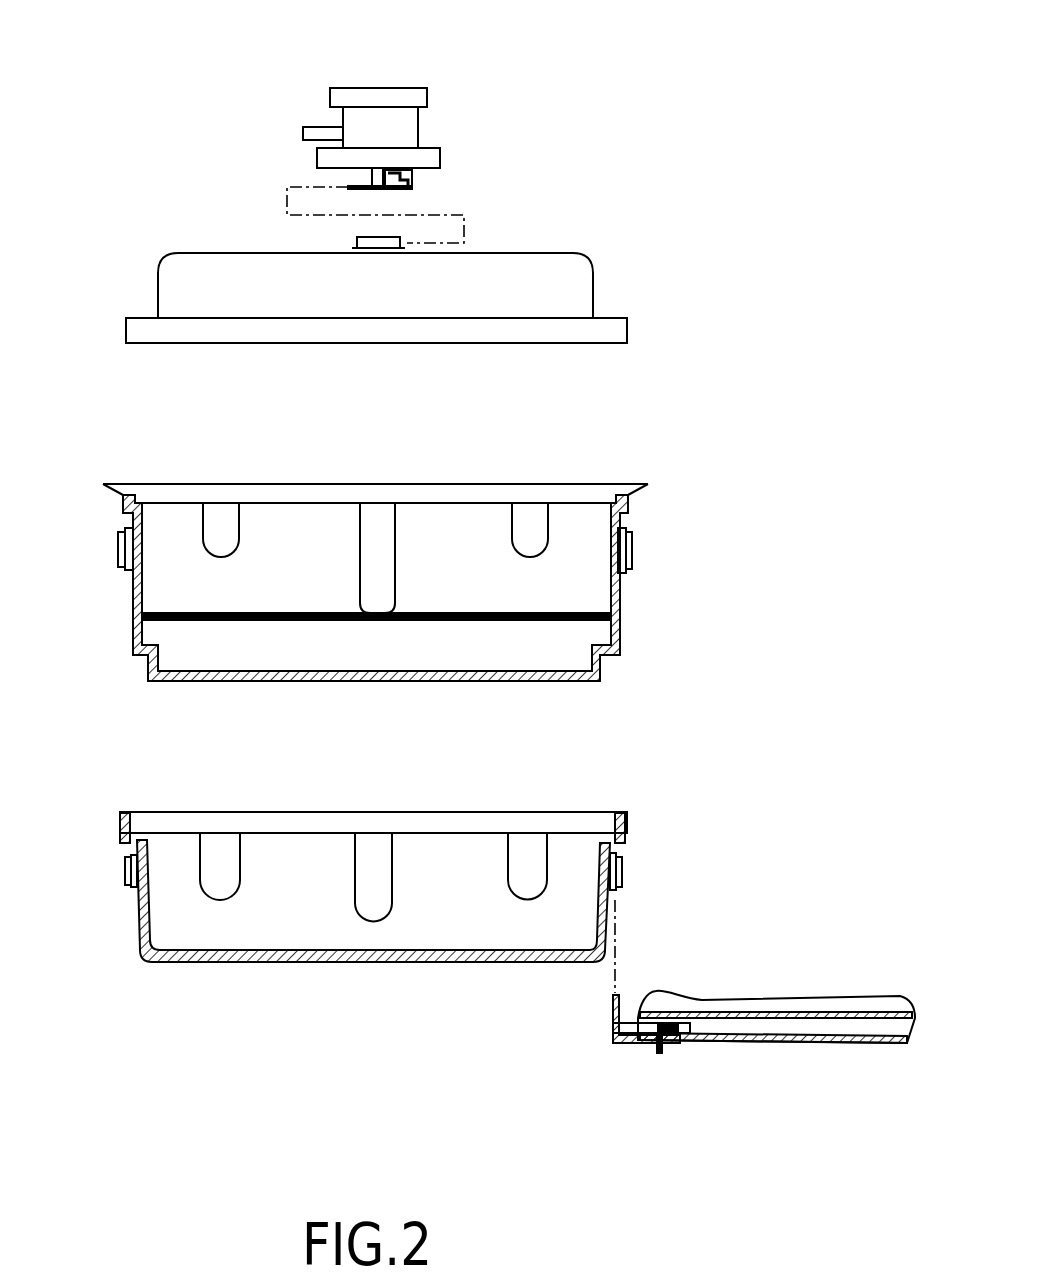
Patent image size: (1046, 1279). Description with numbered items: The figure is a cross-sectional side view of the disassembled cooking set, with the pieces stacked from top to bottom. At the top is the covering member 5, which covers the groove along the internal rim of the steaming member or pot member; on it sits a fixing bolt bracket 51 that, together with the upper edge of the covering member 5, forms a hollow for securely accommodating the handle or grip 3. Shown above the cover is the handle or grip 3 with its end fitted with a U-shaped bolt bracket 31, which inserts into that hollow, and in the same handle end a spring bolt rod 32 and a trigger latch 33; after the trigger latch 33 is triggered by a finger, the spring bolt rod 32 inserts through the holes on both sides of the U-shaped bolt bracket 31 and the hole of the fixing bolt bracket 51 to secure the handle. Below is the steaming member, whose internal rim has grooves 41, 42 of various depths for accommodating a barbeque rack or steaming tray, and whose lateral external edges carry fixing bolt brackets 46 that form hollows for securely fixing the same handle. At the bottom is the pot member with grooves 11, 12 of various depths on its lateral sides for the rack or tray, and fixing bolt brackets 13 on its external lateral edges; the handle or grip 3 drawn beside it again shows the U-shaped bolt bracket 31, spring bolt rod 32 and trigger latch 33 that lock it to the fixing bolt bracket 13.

The handle or grip 3 is at (390, 100).
The U-shaped bolt bracket 31 is at (409, 187).
The spring bolt rod 32 is at (371, 177).
The trigger latch 33 is at (315, 132).
The covering member 5 is at (558, 280).
The fixing bolt bracket 51 is at (354, 246).
The groove 41 is at (374, 529).
The groove 42 is at (527, 524).
The fixing bolt bracket 46 is at (120, 545).
The groove 11 is at (370, 853).
The groove 12 is at (523, 853).
The fixing bolt bracket 13 is at (127, 858).